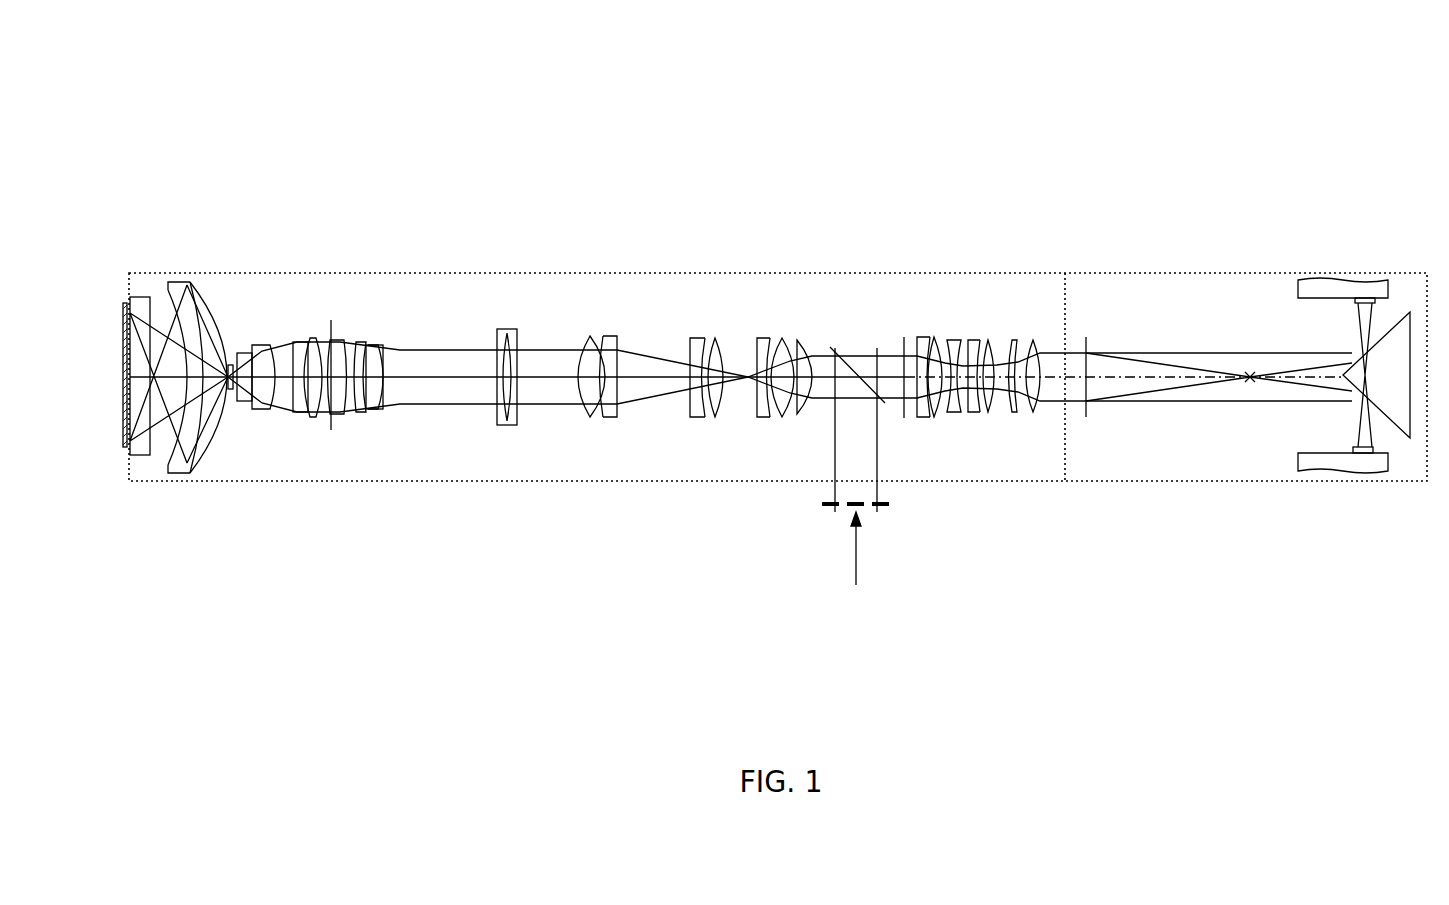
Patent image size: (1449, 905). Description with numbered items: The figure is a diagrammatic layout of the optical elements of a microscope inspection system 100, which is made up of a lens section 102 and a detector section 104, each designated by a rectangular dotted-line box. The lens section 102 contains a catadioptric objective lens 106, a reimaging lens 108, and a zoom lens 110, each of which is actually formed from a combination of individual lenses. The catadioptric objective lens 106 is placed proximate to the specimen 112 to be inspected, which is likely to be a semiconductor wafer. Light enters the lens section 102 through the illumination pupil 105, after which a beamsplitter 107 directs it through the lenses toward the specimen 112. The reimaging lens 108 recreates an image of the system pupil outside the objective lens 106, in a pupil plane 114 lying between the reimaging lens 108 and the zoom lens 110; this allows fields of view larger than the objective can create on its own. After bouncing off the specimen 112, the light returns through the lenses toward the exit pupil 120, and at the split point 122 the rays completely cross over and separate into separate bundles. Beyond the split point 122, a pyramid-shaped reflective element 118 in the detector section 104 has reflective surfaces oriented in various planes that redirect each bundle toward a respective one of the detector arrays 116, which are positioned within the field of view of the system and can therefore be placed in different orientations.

The microscope inspection system 100 is at (922, 78).
The lens section 102 is at (630, 486).
The detector section 104 is at (1234, 486).
The illumination pupil 105 is at (890, 504).
The catadioptric objective lens 106 is at (517, 280).
The beamsplitter 107 is at (835, 350).
The reimaging lens 108 is at (815, 282).
The zoom lens 110 is at (915, 282).
The specimen 112 is at (124, 442).
The pupil plane 114 is at (904, 337).
The detector arrays 116 is at (1357, 302).
The reflective element 118 is at (1407, 312).
The exit pupil 120 is at (1090, 420).
The split point 122 is at (1250, 375).